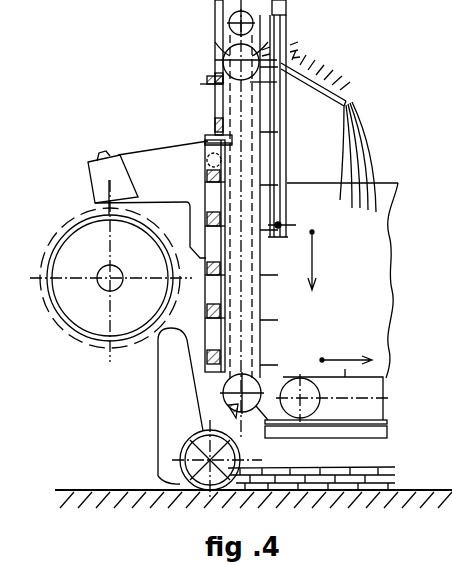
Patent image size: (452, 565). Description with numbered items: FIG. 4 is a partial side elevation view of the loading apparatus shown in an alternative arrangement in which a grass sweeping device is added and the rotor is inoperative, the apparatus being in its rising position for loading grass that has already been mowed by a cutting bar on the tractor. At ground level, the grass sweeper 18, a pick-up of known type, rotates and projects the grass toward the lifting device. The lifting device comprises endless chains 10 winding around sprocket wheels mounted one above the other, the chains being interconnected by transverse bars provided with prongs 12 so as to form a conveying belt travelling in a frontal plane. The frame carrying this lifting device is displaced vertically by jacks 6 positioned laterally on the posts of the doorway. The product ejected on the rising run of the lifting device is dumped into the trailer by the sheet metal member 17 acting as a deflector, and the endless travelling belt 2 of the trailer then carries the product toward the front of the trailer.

The endless travelling belt 2 is at (385, 379).
The jack 6 is at (284, 40).
The endless chain 10 is at (214, 111).
The prong 12 is at (208, 80).
The sheet metal member 17 is at (340, 96).
The grass sweeper 18 is at (176, 440).